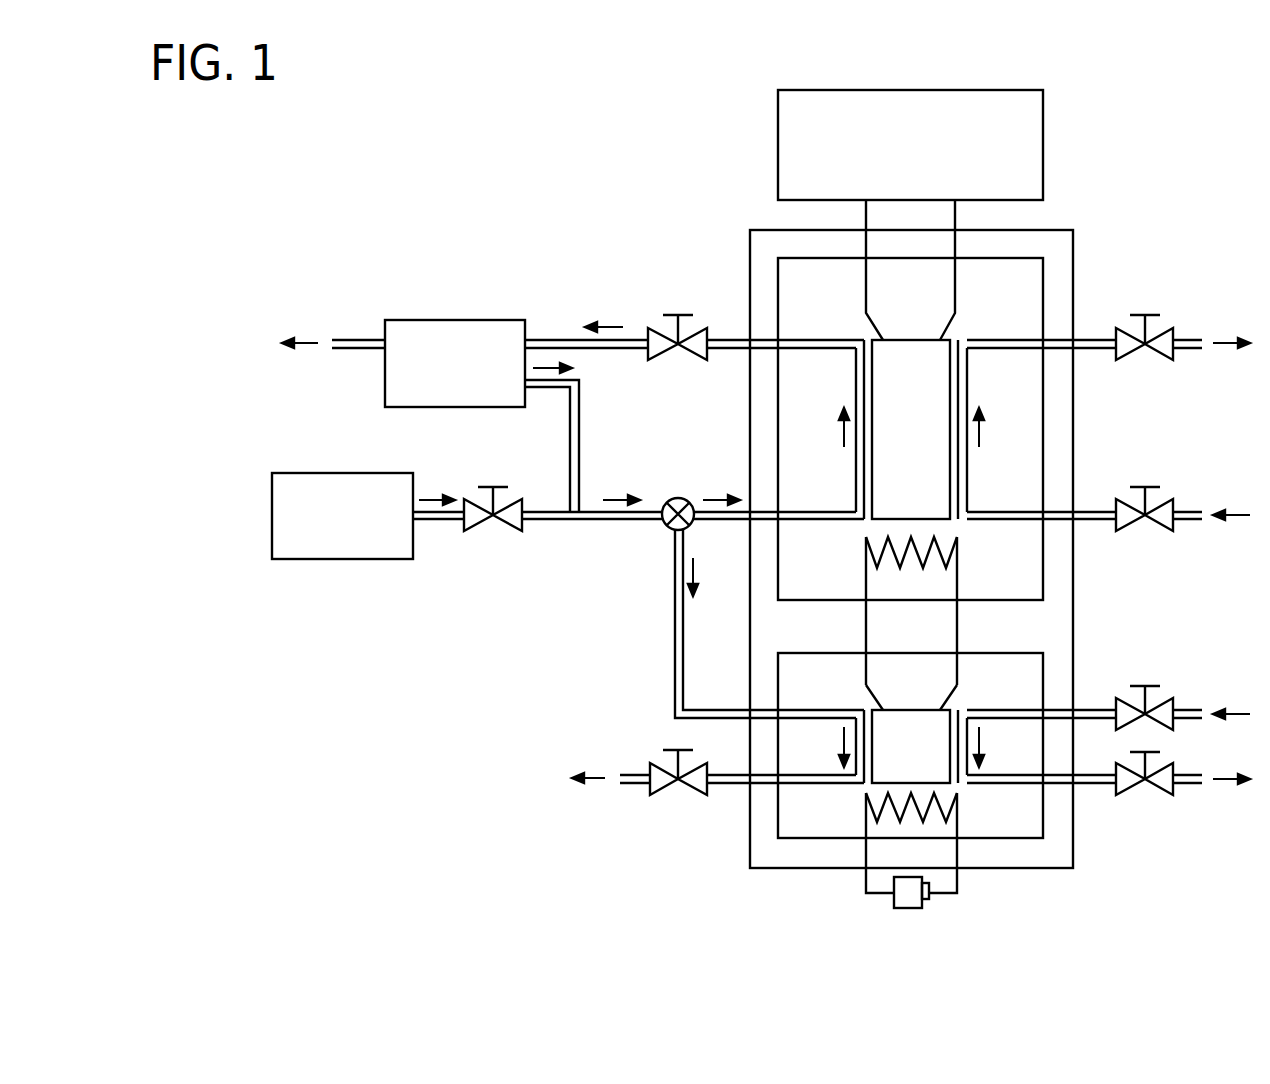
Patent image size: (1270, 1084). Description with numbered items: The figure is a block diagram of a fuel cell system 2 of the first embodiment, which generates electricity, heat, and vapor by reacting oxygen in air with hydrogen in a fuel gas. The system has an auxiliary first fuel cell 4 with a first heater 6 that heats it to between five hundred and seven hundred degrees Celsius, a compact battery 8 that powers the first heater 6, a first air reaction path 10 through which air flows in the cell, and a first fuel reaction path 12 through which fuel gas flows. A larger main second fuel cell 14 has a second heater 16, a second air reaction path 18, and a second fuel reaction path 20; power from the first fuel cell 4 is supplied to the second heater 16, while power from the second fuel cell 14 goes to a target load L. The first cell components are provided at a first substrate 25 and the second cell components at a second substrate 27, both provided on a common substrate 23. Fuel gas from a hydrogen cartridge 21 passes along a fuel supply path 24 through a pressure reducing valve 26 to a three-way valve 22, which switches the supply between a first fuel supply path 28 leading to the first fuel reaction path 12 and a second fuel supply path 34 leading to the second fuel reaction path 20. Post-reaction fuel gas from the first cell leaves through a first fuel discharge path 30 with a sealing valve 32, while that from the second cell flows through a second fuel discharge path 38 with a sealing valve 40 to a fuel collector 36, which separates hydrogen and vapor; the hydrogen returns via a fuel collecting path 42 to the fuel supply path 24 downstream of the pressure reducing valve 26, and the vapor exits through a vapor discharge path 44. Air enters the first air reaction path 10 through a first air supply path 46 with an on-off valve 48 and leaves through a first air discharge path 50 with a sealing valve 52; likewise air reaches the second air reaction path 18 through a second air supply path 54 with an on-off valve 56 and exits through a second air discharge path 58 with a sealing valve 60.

The fuel cell system 2 is at (673, 206).
The first fuel cell 4 is at (882, 770).
The first heater 6 is at (937, 808).
The battery 8 is at (907, 903).
The first air reaction path 10 is at (967, 726).
The first fuel reaction path 12 is at (853, 722).
The second fuel cell 14 is at (935, 378).
The second heater 16 is at (934, 553).
The second air reaction path 18 is at (970, 398).
The second fuel reaction path 20 is at (857, 402).
The hydrogen cartridge 21 is at (368, 550).
The three-way valve 22 is at (683, 497).
The substrate 23 is at (1047, 227).
The fuel supply path 24 is at (562, 518).
The first substrate 25 is at (1017, 653).
The pressure reducing valve 26 is at (510, 528).
The second substrate 27 is at (1045, 270).
The first fuel supply path 28 is at (673, 643).
The first fuel discharge path 30 is at (733, 784).
The sealing valve 32 is at (675, 788).
The second fuel supply path 34 is at (727, 520).
The fuel collector 36 is at (472, 329).
The second fuel discharge path 38 is at (735, 338).
The sealing valve 40 is at (672, 352).
The fuel collecting path 42 is at (570, 438).
The vapor discharge path 44 is at (367, 338).
The first air supply path 46 is at (1088, 710).
The on-off valve 48 is at (1162, 698).
The first air discharge path 50 is at (1095, 785).
The sealing valve 52 is at (1153, 793).
The second air supply path 54 is at (1088, 510).
The on-off valve 56 is at (1162, 500).
The second air discharge path 58 is at (1088, 338).
The sealing valve 60 is at (1162, 328).
The target load L is at (1033, 130).